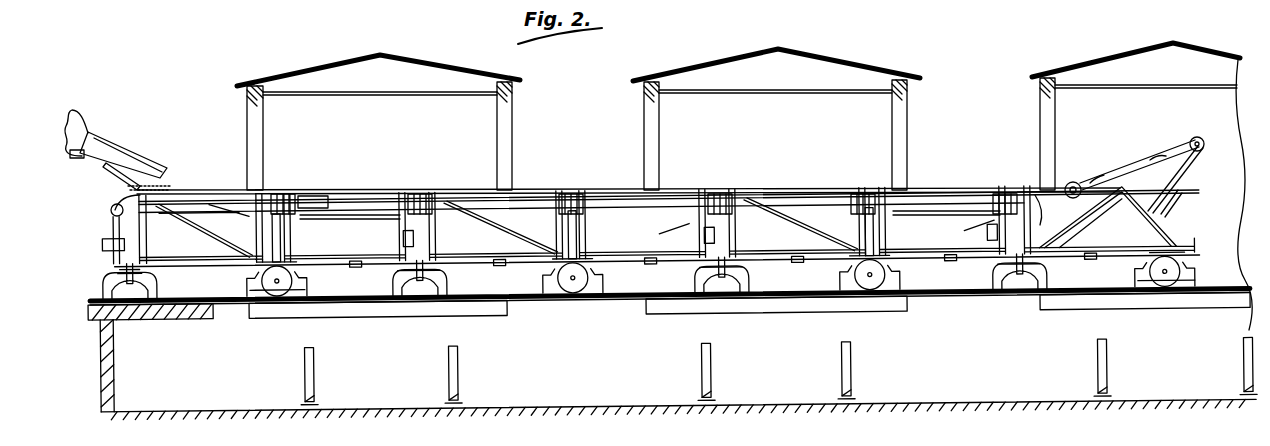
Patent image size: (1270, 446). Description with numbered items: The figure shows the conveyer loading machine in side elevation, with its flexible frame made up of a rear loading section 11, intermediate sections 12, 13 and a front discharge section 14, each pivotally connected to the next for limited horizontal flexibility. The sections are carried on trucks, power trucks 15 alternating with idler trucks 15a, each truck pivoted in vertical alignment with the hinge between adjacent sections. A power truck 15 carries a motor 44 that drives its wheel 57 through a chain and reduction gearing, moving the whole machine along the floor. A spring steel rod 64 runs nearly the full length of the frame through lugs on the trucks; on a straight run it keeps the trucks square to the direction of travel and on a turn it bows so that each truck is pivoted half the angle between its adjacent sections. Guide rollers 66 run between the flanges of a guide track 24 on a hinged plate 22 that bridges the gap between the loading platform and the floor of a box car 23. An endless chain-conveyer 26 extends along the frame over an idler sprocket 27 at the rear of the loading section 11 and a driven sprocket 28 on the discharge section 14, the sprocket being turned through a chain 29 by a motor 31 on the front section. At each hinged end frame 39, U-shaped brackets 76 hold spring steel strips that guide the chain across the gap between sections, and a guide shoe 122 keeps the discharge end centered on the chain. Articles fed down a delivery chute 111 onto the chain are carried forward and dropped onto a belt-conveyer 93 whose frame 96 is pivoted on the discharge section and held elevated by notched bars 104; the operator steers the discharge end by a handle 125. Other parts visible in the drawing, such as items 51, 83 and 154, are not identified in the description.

The loading section 11 is at (201, 228).
The intermediate section 12 is at (645, 224).
The intermediate section 13 is at (647, 224).
The discharge section 14 is at (1109, 219).
The power truck 15 is at (125, 272).
The idler truck 15a is at (285, 245).
The hingedly mounted plate 22 is at (228, 303).
The box car 23 is at (298, 102).
The guide track 24 is at (931, 303).
The chain-conveyer 26 is at (343, 216).
The idler sprocket 27 is at (118, 191).
The driven sprocket 28 is at (1070, 182).
The chain 29 is at (1091, 225).
The motor 31 is at (1038, 198).
The end frame 39 is at (228, 224).
The motor 44 is at (105, 243).
The wheel 51 is at (280, 297).
The wheel 57 is at (133, 297).
The spring steel rod 64 is at (622, 268).
The guide roller 66 is at (300, 300).
The U-shaped bracket 76 is at (307, 200).
The roller 83 is at (286, 192).
The belt-conveyer 93 is at (1112, 185).
The belt-conveyer frame 96 is at (1140, 165).
The notched bar 104 is at (1185, 178).
The delivery chute 111 is at (140, 150).
The guide shoe 122 is at (150, 190).
The handle 125 is at (1180, 218).
The end truck 154 is at (1175, 264).